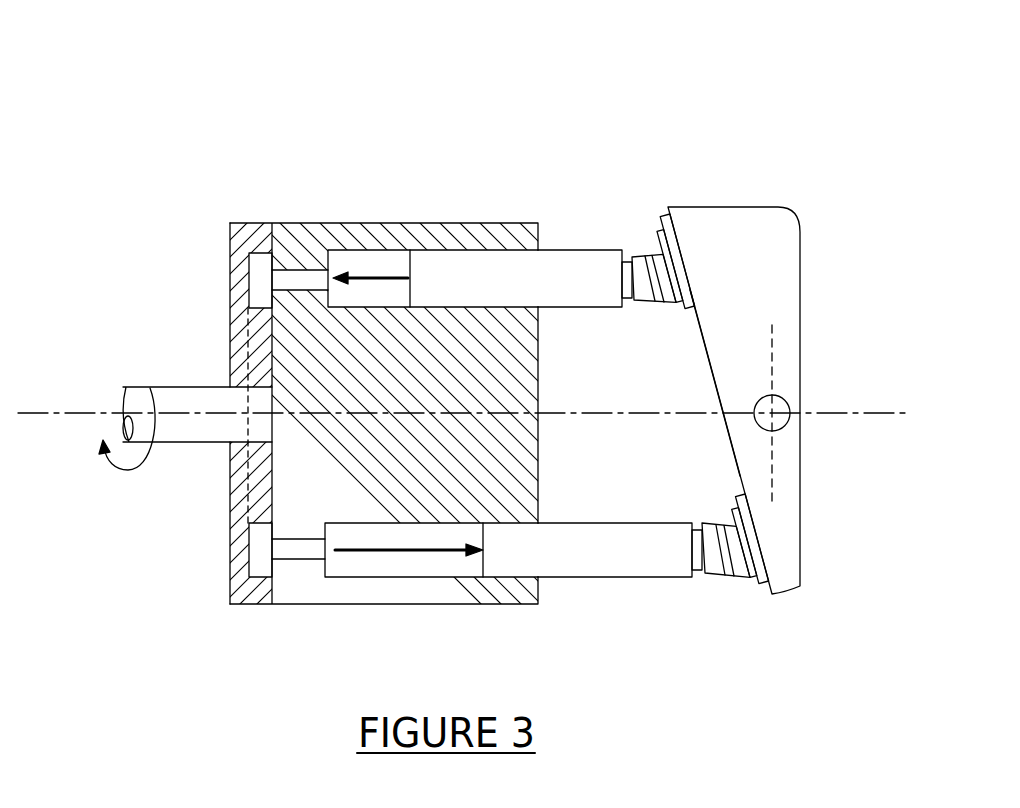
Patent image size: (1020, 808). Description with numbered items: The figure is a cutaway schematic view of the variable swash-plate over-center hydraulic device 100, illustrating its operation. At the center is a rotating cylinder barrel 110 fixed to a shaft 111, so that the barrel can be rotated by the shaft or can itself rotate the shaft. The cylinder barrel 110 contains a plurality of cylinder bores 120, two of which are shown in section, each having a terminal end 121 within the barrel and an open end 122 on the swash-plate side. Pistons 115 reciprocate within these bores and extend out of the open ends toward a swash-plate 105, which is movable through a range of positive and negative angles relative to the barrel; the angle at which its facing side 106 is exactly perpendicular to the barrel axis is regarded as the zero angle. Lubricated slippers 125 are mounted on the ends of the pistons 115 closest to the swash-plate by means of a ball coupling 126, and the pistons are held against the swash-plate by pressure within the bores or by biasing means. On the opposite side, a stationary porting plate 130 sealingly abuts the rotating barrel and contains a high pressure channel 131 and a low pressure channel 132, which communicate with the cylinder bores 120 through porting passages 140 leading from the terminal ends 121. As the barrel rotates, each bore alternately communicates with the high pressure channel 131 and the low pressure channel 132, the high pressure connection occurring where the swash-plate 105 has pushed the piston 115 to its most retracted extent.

The hydraulic device 100 is at (780, 80).
The swash-plate 105 is at (783, 290).
The facing side 106 is at (705, 352).
The cylinder barrel 110 is at (407, 597).
The shaft 111 is at (192, 428).
The piston 115 is at (567, 297).
The cylinder bore 120 is at (388, 264).
The terminal end 121 is at (344, 256).
The open end 122 is at (540, 270).
The lubricated slipper 125 is at (674, 263).
The ball coupling 126 is at (629, 298).
The porting plate 130 is at (252, 593).
The high pressure channel 131 is at (258, 547).
The low pressure channel 132 is at (260, 281).
The porting passage 140 is at (297, 272).